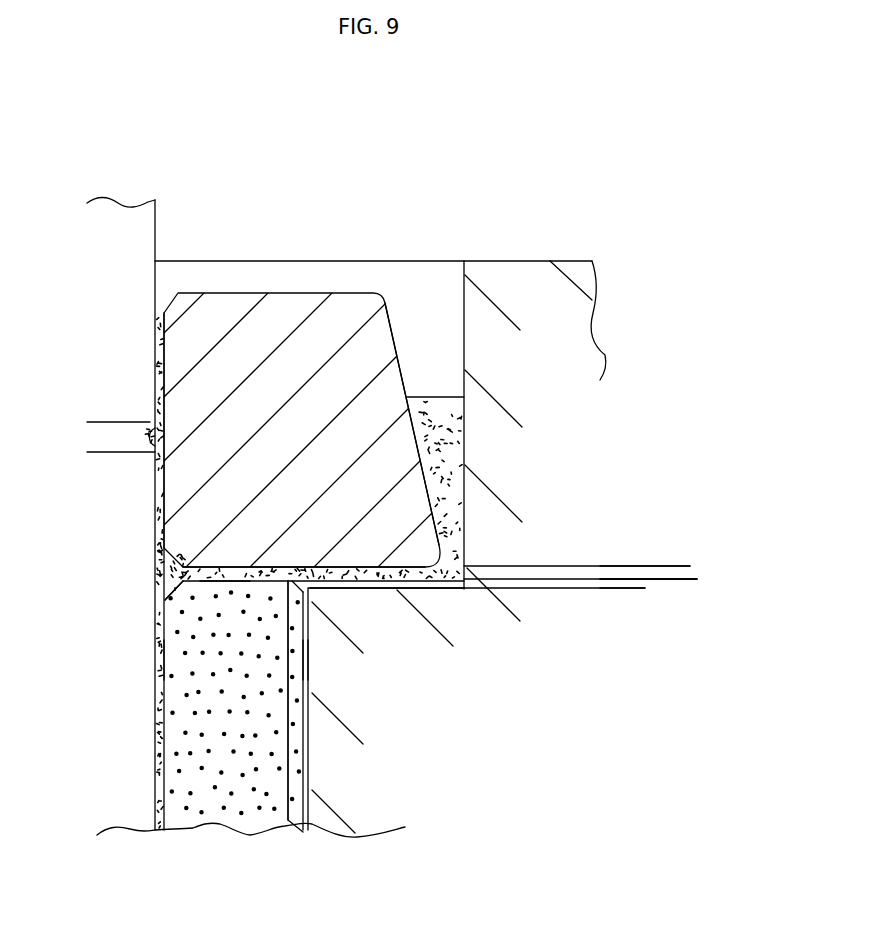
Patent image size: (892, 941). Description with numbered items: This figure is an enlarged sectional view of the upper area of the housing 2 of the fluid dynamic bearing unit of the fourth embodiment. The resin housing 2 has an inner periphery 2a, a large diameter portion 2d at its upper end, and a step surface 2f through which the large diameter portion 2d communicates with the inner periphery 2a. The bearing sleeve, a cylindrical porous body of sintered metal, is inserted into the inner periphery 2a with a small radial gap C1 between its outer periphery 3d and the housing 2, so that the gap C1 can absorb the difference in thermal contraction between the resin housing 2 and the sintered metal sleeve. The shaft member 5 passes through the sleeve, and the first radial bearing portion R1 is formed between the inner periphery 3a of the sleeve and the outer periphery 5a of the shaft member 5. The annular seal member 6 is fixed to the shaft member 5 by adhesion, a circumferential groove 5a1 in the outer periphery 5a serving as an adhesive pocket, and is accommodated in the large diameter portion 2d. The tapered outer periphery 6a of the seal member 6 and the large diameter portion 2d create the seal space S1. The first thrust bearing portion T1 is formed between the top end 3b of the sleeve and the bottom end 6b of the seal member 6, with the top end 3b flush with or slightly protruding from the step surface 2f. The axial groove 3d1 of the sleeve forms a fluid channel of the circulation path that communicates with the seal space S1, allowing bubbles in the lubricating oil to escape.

The shaft member 5 is at (130, 242).
The outer periphery of shaft member 5a is at (158, 798).
The circumferential groove 5a1 is at (117, 432).
The seal member 6 is at (285, 308).
The outer periphery of seal member 6a is at (413, 427).
The bottom end of seal member 6b is at (247, 565).
The housing 2 is at (567, 330).
The inner periphery of housing 2a is at (310, 708).
The large diameter portion 2d is at (463, 297).
The step surface 2f is at (369, 581).
The inner periphery of bearing sleeve 3a is at (165, 723).
The top end of bearing sleeve 3b is at (203, 573).
The outer periphery of bearing sleeve 3d is at (307, 777).
The axial groove 3d1 is at (307, 747).
The seal space S1 is at (443, 452).
The first thrust bearing portion T1 is at (223, 574).
The first radial bearing portion R1 is at (163, 657).
The radial gap C1 is at (306, 658).